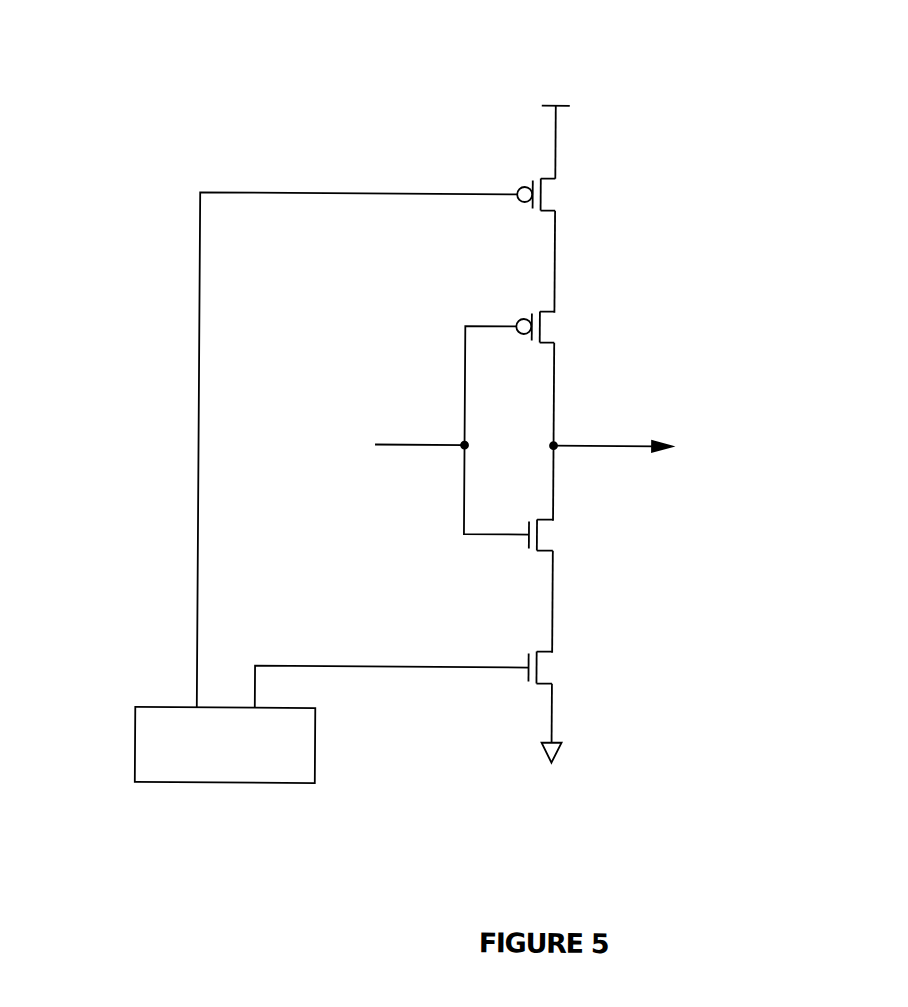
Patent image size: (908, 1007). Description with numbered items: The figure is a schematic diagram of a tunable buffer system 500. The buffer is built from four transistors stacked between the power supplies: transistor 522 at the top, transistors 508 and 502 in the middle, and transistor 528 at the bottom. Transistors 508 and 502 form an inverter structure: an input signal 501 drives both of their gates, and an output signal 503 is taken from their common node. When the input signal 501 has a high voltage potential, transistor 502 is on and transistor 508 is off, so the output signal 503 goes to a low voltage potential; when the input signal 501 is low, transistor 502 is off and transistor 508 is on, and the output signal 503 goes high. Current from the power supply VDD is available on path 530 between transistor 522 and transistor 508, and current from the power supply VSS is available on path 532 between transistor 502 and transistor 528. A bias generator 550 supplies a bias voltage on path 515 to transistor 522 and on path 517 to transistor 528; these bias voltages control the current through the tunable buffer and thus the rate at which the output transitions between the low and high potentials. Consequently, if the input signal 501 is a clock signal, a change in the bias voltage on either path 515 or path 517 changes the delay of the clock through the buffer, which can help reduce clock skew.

The tunable buffer system 500 is at (818, 97).
The input signal 501 is at (422, 444).
The transistor 502 is at (526, 549).
The output signal 503 is at (616, 444).
The transistor 508 is at (526, 342).
The path 515 is at (321, 193).
The path 517 is at (318, 666).
The transistor 522 is at (526, 204).
The transistor 528 is at (526, 682).
The path 530 is at (554, 277).
The path 532 is at (552, 633).
The bias generator 550 is at (137, 722).